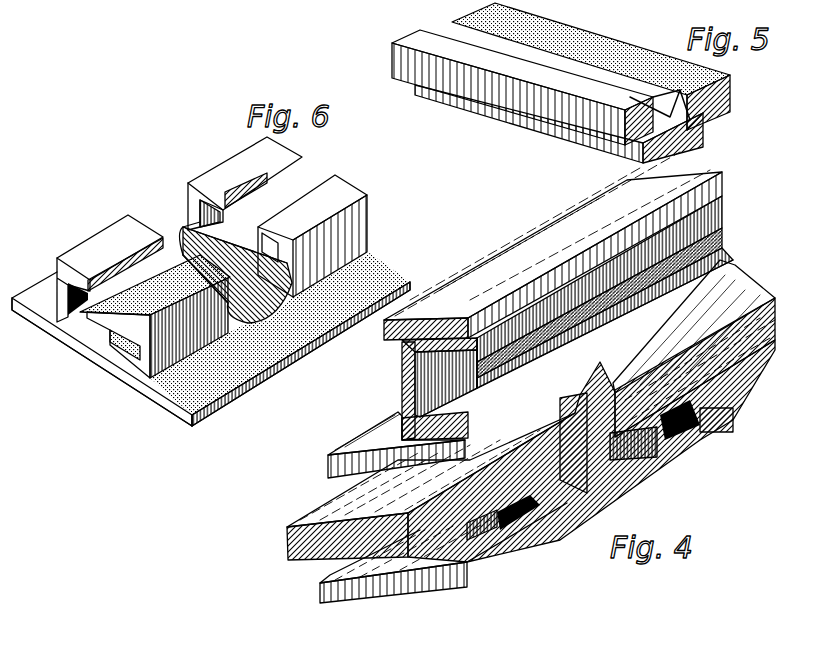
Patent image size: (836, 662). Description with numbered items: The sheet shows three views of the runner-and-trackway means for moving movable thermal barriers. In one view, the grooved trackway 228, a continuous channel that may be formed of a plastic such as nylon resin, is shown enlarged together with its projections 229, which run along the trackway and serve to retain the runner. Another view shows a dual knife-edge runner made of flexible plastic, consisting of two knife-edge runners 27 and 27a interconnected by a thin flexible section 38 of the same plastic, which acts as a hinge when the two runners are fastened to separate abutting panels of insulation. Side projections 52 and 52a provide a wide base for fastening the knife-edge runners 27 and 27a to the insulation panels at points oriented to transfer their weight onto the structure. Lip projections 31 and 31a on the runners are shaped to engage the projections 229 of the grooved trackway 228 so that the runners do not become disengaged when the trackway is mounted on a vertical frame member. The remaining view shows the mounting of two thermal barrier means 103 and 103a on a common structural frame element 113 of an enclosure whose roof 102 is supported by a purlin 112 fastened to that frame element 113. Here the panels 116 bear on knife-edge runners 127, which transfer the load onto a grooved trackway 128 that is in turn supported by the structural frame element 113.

In FIG. 6, the knife-edge runner 27 is at (107, 353).
In FIG. 6, the knife-edge runner 27a is at (193, 223).
In FIG. 6, the lip projection 31 is at (157, 287).
In FIG. 6, the lip projection 31a is at (277, 217).
In FIG. 6, the thin flexible section 38 is at (257, 322).
In FIG. 6, the side projection 52 is at (32, 320).
In FIG. 6, the side projection 52a is at (192, 418).
In FIG. 5, the grooved trackway 228 is at (388, 28).
In FIG. 5, the projections 229 is at (713, 97).
In FIG. 4, the roof 102 is at (581, 203).
In FIG. 4, the thermal barrier means 103 is at (290, 551).
In FIG. 4, the thermal barrier means 103a is at (762, 350).
In FIG. 4, the purlin 112 is at (401, 380).
In FIG. 4, the structural frame element 113 is at (317, 593).
In FIG. 4, the panels 116 is at (298, 523).
In FIG. 4, the knife-edge runners 127 is at (503, 533).
In FIG. 4, the grooved trackway 128 is at (540, 520).